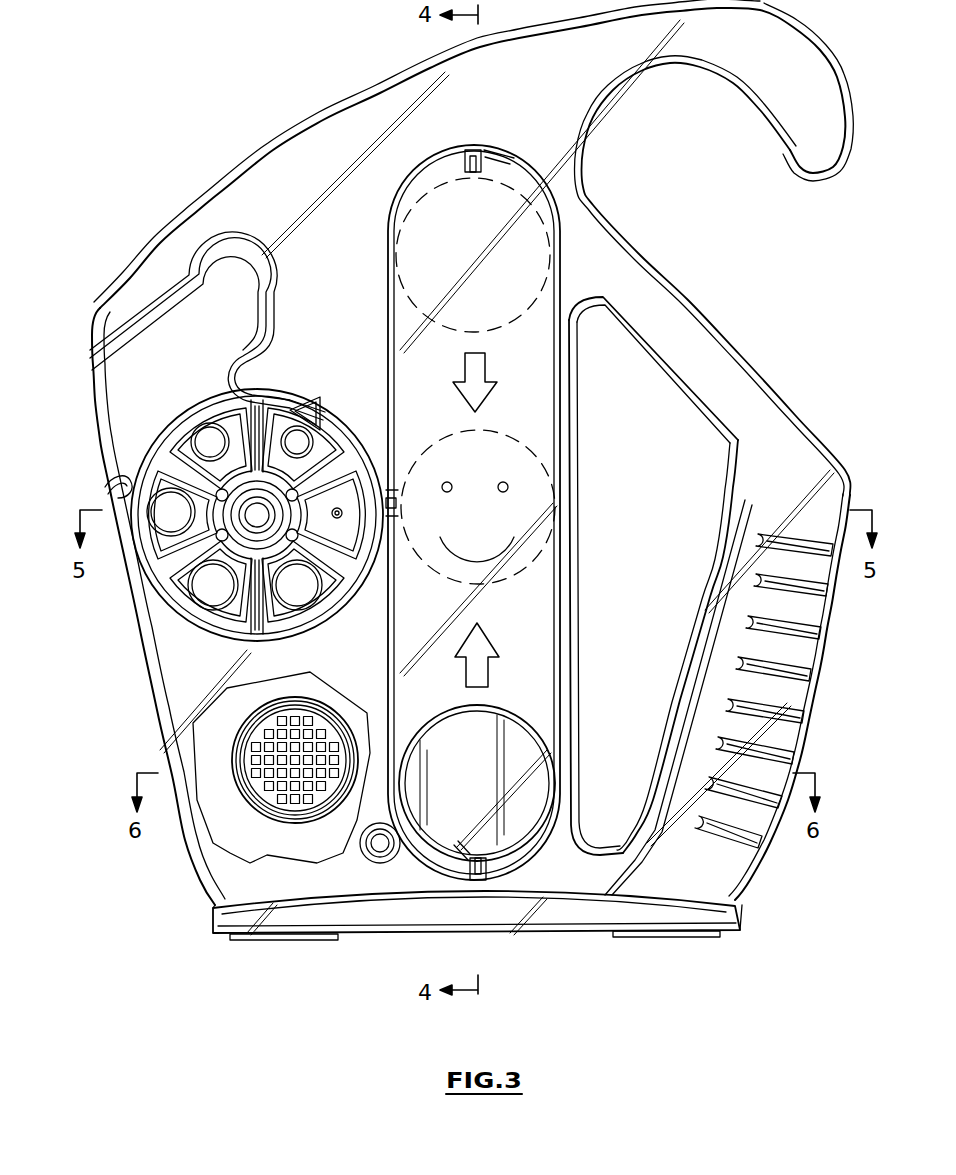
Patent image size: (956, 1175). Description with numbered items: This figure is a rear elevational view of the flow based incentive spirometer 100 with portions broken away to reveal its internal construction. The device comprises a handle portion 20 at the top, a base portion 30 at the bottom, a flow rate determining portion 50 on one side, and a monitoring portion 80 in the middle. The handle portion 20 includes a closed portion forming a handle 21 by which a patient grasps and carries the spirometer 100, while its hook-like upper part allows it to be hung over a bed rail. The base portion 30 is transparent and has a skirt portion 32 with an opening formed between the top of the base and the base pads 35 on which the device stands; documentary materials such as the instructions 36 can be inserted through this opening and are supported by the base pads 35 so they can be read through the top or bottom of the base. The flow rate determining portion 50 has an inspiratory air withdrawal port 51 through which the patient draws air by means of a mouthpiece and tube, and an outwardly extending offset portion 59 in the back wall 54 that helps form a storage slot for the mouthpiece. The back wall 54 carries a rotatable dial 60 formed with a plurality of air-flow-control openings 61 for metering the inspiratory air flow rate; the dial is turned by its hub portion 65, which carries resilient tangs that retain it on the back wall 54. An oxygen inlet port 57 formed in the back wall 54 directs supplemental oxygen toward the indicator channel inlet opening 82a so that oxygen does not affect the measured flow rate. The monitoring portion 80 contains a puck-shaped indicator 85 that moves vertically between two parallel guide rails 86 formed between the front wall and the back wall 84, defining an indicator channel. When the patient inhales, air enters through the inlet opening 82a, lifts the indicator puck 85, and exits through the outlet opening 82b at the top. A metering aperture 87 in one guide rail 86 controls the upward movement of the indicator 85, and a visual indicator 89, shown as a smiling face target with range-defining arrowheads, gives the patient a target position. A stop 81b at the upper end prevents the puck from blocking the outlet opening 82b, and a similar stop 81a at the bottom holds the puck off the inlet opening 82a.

The flow based incentive spirometer 100 is at (290, 114).
The handle portion 20 is at (783, 387).
The handle 21 is at (730, 460).
The base portion 30 is at (471, 939).
The skirt portion 32 is at (296, 908).
The base pads 35 is at (252, 940).
The instructions 36 is at (490, 932).
The flow rate determining portion 50 is at (246, 541).
The inspiratory air withdrawal port 51 is at (245, 822).
The back wall 54 is at (373, 671).
The oxygen inlet port 57 is at (368, 862).
The outwardly extending offset portion 59 is at (190, 292).
The rotatable dial 60 is at (158, 495).
The air-flow-control openings 61 is at (205, 605).
The hub portion 65 is at (240, 458).
The monitoring portion 80 is at (526, 437).
The stop 81a is at (478, 856).
The stop 81b is at (472, 154).
The indicator channel inlet opening 82a is at (463, 872).
The indicator channel outlet opening 82b is at (513, 160).
The back wall 84 is at (536, 412).
The indicator puck 85 is at (527, 770).
The guide rails 86 is at (568, 300).
The metering aperture 87 is at (392, 496).
The visual indicator 89 is at (545, 508).